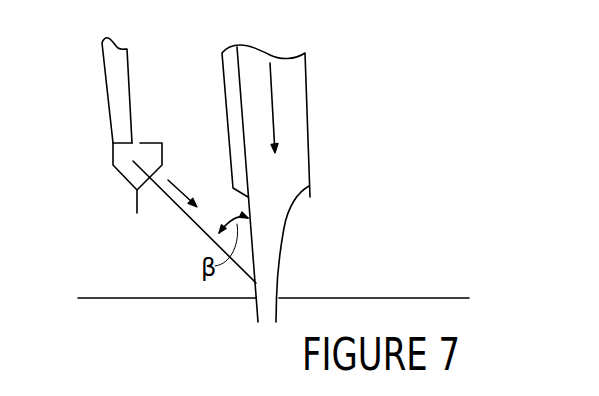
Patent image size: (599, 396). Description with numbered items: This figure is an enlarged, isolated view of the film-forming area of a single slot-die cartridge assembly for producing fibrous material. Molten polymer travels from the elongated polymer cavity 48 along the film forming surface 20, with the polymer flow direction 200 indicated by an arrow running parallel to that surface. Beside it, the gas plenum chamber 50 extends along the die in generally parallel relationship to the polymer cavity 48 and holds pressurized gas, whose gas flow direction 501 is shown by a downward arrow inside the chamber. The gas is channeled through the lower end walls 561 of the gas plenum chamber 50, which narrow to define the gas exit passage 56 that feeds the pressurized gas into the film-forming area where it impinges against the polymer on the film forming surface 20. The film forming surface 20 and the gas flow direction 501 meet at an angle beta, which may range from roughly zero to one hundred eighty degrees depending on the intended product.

The elongated polymer cavity 48 is at (115, 62).
The film forming surface 20 is at (203, 222).
The polymer flow direction 200 is at (180, 186).
The gas plenum chamber 50 is at (295, 127).
The gas flow direction 501 is at (273, 92).
The lower end walls of gas plenum chamber 561 is at (288, 225).
The gas exit passage 56 is at (255, 331).